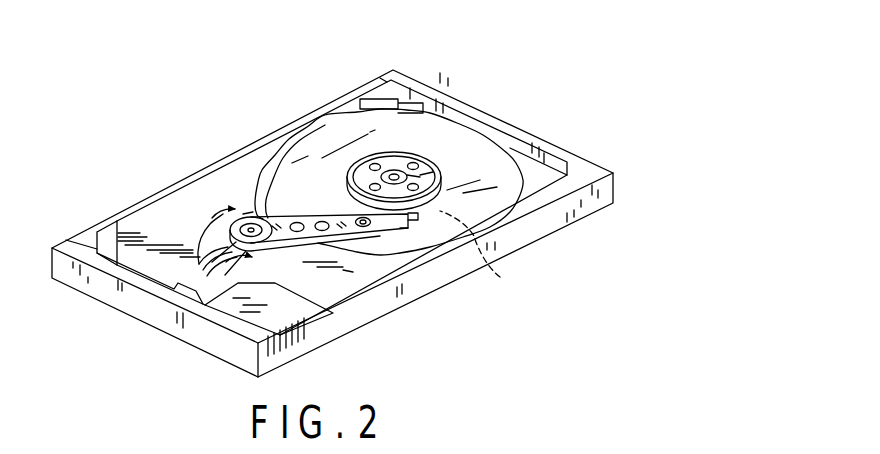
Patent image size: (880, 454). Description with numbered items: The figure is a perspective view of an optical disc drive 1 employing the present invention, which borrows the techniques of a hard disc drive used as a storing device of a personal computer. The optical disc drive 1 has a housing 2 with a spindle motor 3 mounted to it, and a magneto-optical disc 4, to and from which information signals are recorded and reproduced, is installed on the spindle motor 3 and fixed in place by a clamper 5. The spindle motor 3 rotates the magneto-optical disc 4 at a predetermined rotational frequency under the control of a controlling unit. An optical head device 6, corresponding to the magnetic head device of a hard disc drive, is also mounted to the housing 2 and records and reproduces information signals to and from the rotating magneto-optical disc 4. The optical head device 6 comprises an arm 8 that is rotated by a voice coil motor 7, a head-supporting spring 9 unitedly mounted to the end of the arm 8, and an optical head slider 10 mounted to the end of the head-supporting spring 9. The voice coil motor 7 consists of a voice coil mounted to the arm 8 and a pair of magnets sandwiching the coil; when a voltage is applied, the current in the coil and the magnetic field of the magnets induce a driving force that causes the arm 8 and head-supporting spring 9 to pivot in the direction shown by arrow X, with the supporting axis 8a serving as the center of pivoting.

The optical disc drive 1 is at (434, 78).
The housing 2 is at (525, 234).
The spindle motor 3 is at (500, 277).
The magneto-optical disc 4 is at (474, 147).
The clamper 5 is at (360, 165).
The optical head device 6 is at (305, 193).
The voice coil motor 7 is at (162, 223).
The arm 8 is at (251, 228).
The supporting axis 8a is at (245, 215).
The head-supporting spring 9 is at (401, 229).
The optical head slider 10 is at (417, 217).